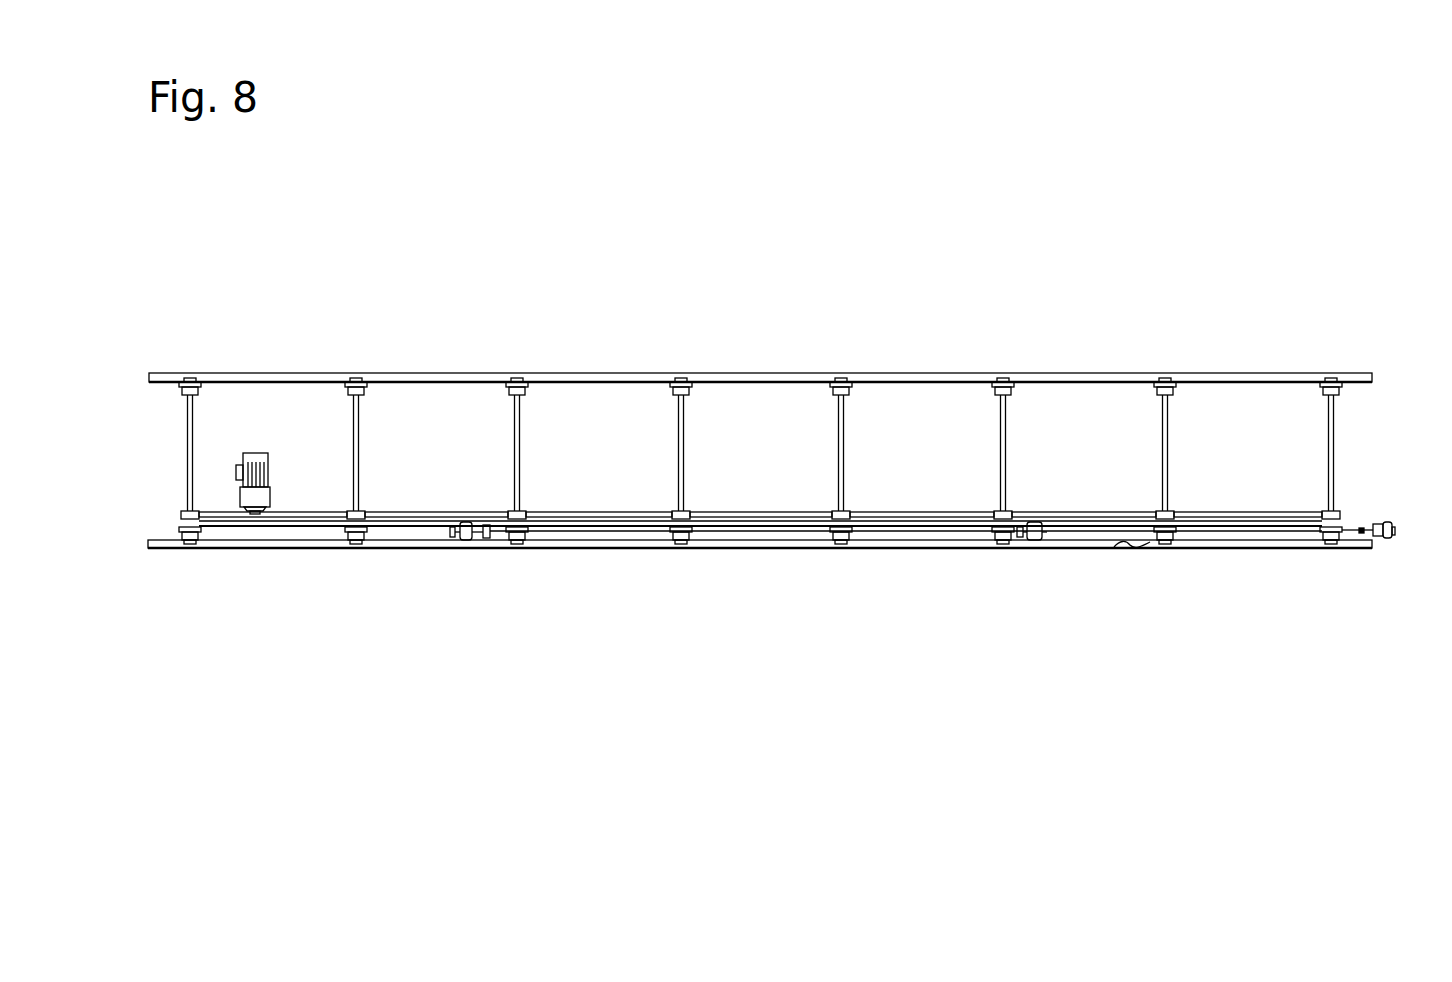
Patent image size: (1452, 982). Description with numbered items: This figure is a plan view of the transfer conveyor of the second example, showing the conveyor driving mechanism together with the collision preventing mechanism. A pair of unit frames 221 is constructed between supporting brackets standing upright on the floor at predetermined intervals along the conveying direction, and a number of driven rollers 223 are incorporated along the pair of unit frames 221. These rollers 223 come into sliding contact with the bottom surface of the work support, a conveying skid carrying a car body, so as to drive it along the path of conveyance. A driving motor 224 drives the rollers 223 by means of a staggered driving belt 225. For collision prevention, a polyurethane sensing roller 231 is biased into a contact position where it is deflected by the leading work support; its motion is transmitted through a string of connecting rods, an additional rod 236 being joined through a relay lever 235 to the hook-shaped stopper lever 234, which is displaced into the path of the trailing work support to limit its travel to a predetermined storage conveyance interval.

The unit frame 221 is at (163, 376).
The driven roller 223 is at (199, 392).
The driving motor 224 is at (256, 457).
The staggered driving belt 225 is at (309, 520).
The sensing roller 231 is at (466, 541).
The stopper lever 234 is at (1387, 540).
The relay lever 235 is at (1032, 541).
The additional rod 236 is at (1117, 547).